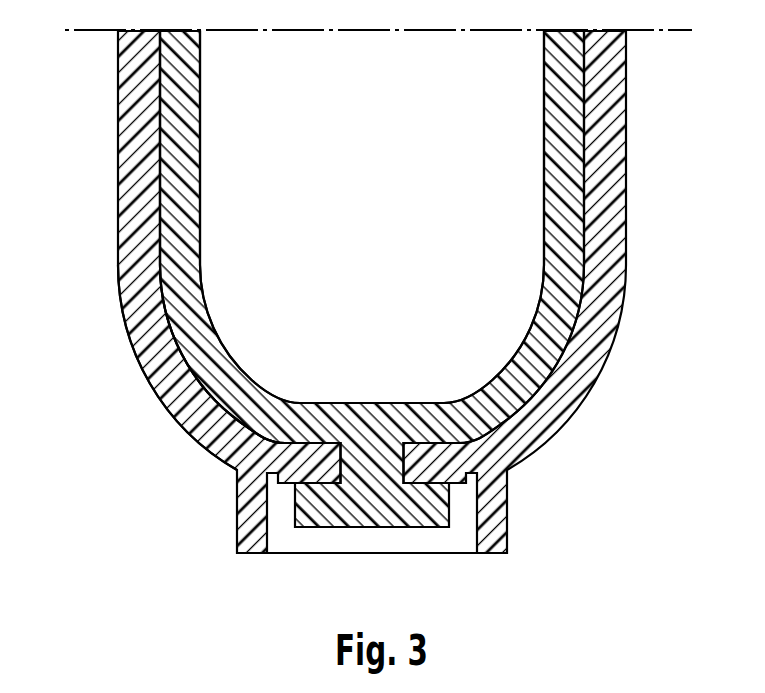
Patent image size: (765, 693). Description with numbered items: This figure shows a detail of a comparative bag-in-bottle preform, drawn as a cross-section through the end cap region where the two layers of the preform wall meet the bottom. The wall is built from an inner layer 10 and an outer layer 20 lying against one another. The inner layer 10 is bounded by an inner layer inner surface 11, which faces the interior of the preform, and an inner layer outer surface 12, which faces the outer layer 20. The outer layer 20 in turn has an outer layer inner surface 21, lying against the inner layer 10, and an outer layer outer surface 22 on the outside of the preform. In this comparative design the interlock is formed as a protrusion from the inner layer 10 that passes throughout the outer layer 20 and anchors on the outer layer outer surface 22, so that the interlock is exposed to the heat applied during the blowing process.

The inner layer 10 is at (563, 293).
The inner layer inner surface 11 is at (543, 247).
The inner layer outer surface 12 is at (587, 243).
The outer layer 20 is at (128, 329).
The outer layer inner surface 21 is at (172, 317).
The outer layer outer surface 22 is at (165, 372).